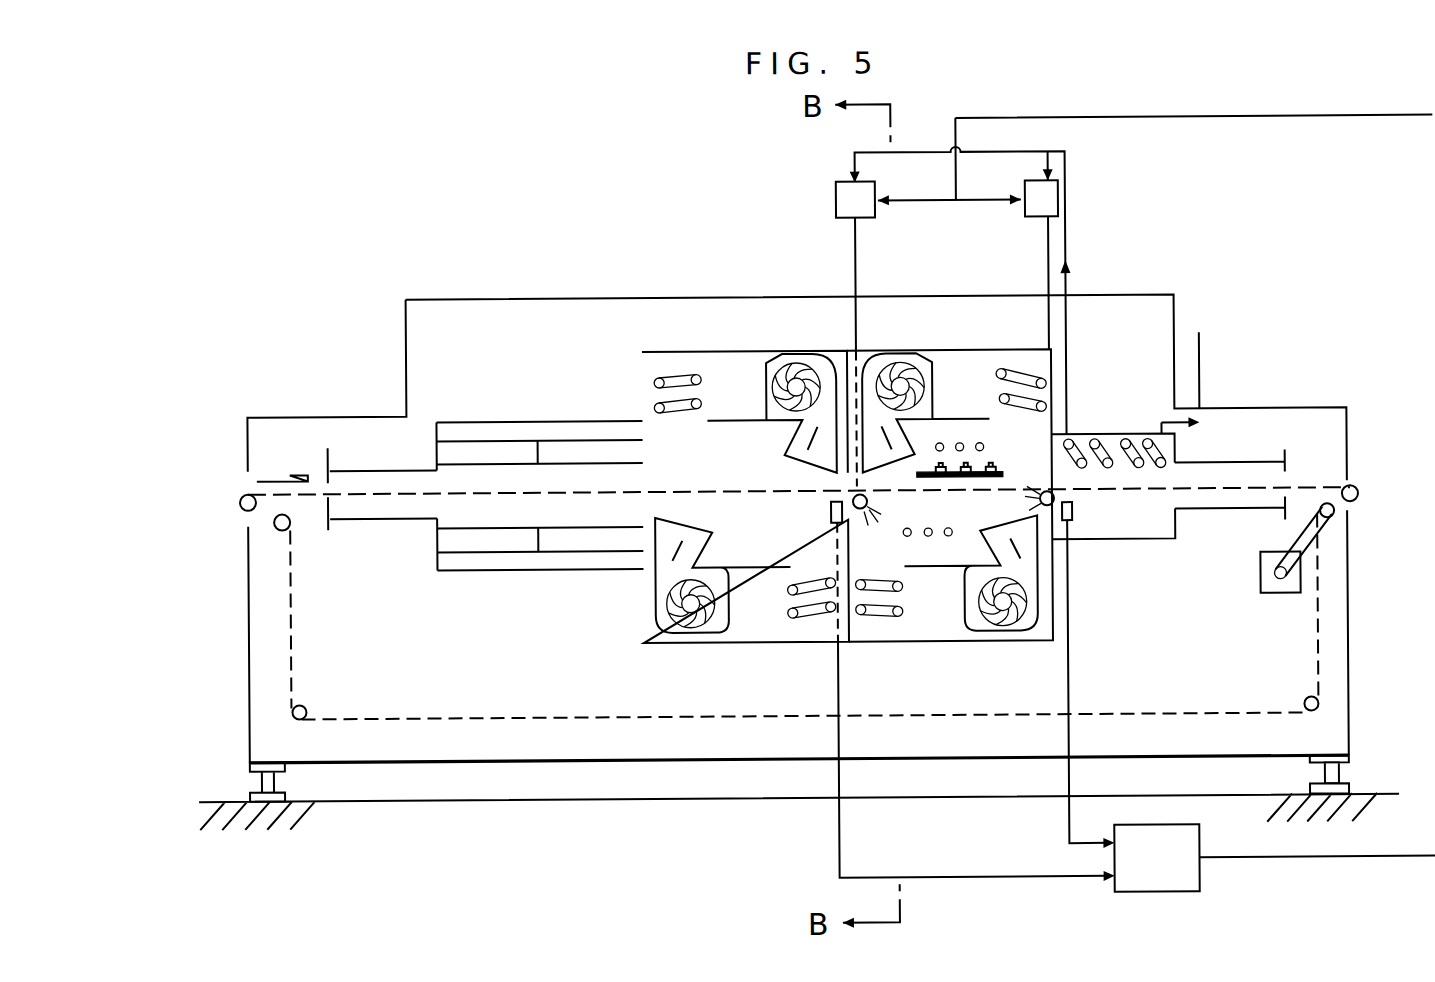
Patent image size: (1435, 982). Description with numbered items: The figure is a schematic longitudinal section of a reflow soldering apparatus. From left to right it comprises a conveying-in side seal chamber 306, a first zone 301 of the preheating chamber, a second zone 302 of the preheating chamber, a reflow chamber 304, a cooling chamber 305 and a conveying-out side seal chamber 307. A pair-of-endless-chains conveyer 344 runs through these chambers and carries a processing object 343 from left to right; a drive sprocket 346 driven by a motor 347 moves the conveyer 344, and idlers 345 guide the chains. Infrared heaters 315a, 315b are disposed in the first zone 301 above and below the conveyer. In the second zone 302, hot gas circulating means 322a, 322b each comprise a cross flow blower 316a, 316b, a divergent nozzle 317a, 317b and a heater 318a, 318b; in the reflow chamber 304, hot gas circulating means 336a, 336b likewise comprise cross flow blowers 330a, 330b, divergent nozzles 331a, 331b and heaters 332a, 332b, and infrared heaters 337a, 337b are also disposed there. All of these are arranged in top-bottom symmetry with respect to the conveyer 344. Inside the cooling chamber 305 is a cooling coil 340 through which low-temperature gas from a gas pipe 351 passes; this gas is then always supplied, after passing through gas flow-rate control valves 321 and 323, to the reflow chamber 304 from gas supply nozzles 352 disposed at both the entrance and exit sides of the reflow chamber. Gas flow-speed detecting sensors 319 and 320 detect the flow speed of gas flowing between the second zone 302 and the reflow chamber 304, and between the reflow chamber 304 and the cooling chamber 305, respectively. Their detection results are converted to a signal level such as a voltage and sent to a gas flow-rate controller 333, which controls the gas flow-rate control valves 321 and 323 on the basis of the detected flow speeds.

The first zone of the preheating chamber 301 is at (468, 433).
The second zone of the preheating chamber 302 is at (660, 430).
The reflow chamber 304 is at (975, 385).
The cooling chamber 305 is at (1090, 434).
The conveying-in side seal chamber 306 is at (373, 487).
The conveying-out side seal chamber 307 is at (1247, 478).
The infrared heater 315a is at (570, 453).
The infrared heater 315b is at (464, 545).
The cross flow blower 316a is at (790, 365).
The cross flow blower 316b is at (657, 622).
The divergent nozzle 317a is at (797, 452).
The divergent nozzle 317b is at (665, 583).
The heater 318a is at (652, 322).
The heater 318b is at (790, 625).
The gas flow-speed detecting sensor 319 is at (831, 512).
The gas flow-speed detecting sensor 320 is at (1075, 511).
The gas flow-rate control valve 321 is at (840, 205).
The hot gas circulating means 322a is at (720, 325).
The hot gas circulating means 322b is at (654, 612).
The gas flow-rate control valve 323 is at (1052, 199).
The cross flow blower 330a is at (900, 357).
The cross flow blower 330b is at (977, 626).
The divergent nozzle 331a is at (925, 400).
The divergent nozzle 331b is at (1008, 622).
The heater 332a is at (1008, 327).
The heater 332b is at (893, 631).
The gas flow-rate controller 333 is at (1198, 877).
The hot gas circulating means 336a is at (952, 338).
The hot gas circulating means 336b is at (958, 635).
The infrared heater 337a is at (962, 442).
The infrared heater 337b is at (928, 538).
The cooling coil 340 is at (1140, 470).
The processing object 343 is at (918, 476).
The conveyer 344 is at (1318, 632).
The idler 345 is at (275, 527).
The drive sprocket 346 is at (1333, 518).
The motor 347 is at (1270, 597).
The gas pipe 351 is at (1200, 368).
The gas supply nozzle 352 is at (852, 498).